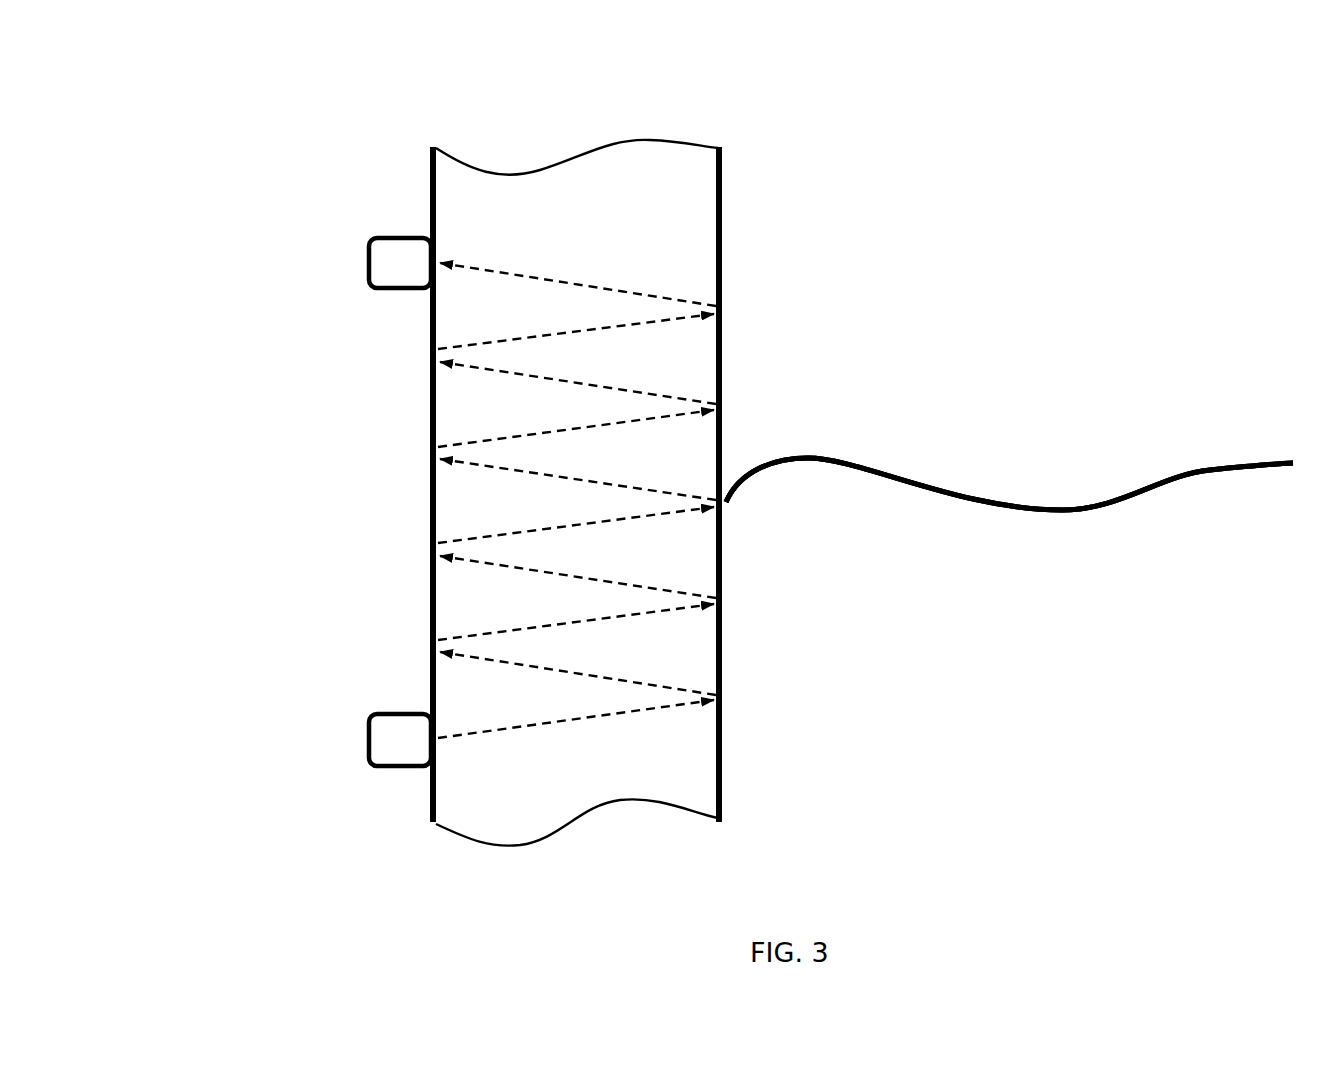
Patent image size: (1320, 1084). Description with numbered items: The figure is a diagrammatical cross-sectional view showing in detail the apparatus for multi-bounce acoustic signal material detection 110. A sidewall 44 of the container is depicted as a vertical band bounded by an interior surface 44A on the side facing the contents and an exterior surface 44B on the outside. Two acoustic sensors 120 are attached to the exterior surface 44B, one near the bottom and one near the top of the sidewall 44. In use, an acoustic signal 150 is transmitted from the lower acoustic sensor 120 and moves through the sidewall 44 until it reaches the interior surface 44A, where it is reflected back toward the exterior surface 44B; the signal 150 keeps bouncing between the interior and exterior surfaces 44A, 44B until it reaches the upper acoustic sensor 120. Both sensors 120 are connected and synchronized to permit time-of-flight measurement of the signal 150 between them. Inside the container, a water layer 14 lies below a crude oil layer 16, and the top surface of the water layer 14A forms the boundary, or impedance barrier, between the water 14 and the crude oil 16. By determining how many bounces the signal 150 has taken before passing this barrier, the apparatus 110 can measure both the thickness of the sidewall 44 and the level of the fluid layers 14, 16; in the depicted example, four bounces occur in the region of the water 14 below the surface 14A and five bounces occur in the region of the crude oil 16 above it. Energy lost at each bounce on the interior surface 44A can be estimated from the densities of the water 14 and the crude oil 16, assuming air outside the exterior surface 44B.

The apparatus for multi-bounce acoustic signal material detection 110 is at (235, 168).
The sidewall 44 is at (722, 122).
The interior surface 44A is at (724, 237).
The exterior surface 44B is at (428, 188).
The acoustic sensor 120 is at (368, 260).
The acoustic signal 150 is at (550, 732).
The water layer 14 is at (1049, 593).
The top surface of the water layer 14A is at (1135, 505).
The crude oil layer 16 is at (1049, 363).